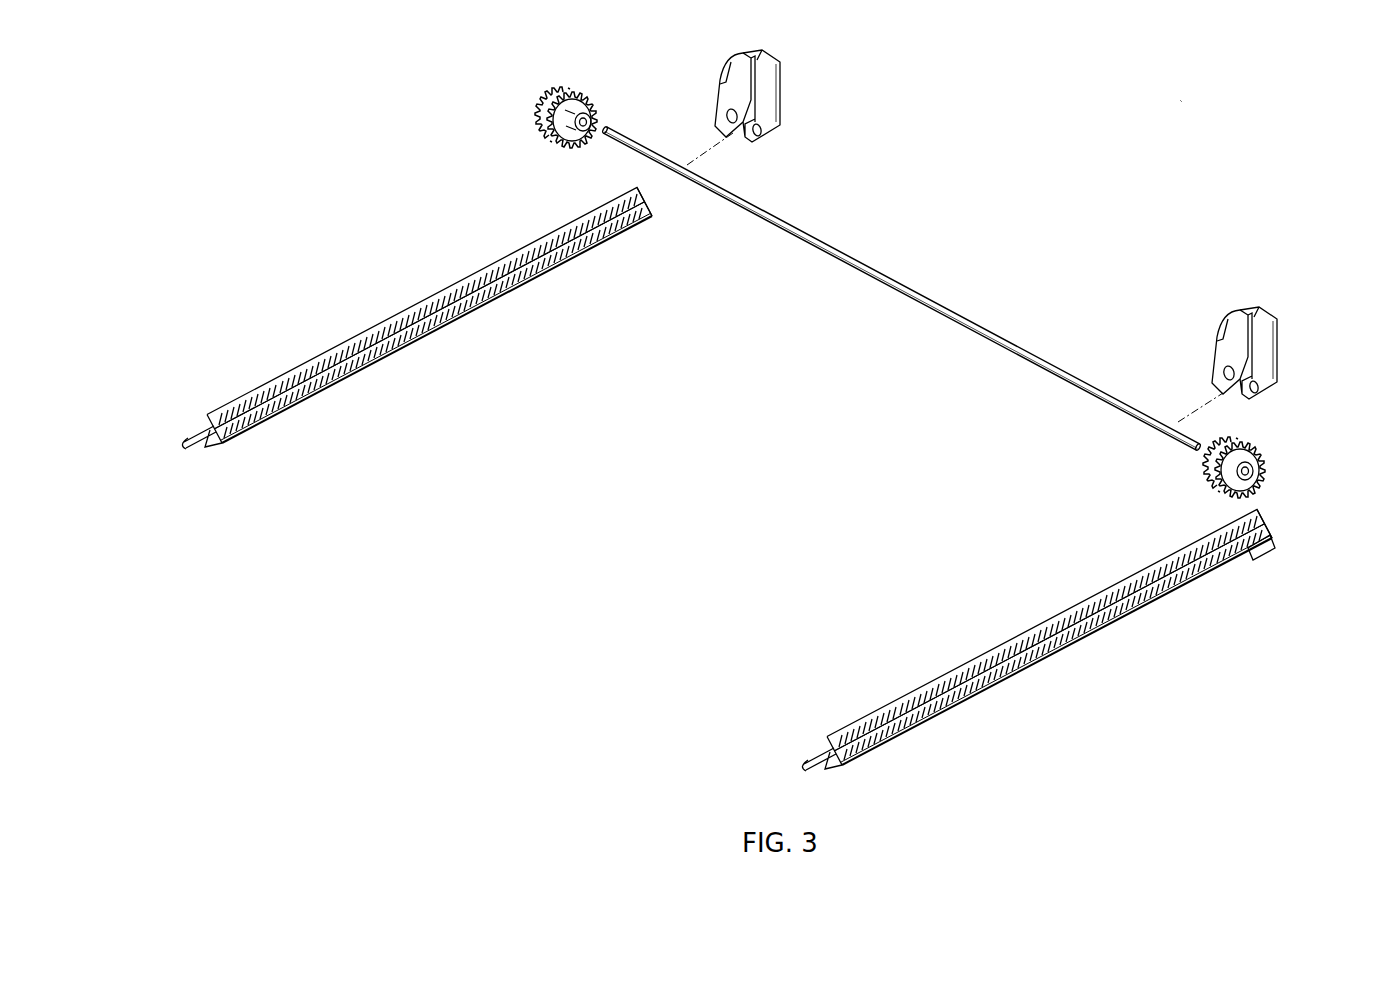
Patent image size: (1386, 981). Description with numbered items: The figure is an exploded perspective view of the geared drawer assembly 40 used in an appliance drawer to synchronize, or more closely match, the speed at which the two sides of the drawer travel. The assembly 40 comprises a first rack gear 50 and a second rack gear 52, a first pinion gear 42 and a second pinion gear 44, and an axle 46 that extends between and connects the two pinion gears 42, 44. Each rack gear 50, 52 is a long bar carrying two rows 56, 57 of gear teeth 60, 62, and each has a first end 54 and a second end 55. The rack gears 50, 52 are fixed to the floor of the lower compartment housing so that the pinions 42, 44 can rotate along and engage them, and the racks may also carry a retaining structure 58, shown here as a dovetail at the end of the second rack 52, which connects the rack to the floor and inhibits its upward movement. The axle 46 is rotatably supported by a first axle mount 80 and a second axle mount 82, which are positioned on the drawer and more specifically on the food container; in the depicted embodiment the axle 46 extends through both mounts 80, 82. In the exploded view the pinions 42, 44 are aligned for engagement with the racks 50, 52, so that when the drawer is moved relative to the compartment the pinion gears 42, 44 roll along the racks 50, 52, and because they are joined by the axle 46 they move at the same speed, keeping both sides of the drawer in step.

The geared drawer assembly 40 is at (1160, 115).
The first pinion gear 42 is at (586, 72).
The second pinion gear 44 is at (1276, 450).
The axle 46 is at (978, 310).
The first rack gear 50 is at (185, 443).
The second rack gear 52 is at (795, 764).
The first end 54 is at (215, 448).
The second end 55 is at (650, 213).
The first row of gear teeth 56 is at (360, 337).
The second row of gear teeth 57 is at (393, 351).
The retaining structure 58 is at (1261, 572).
The gear teeth 60 is at (280, 377).
The gear teeth 62 is at (307, 397).
The first axle mount 80 is at (803, 80).
The second axle mount 82 is at (1272, 293).